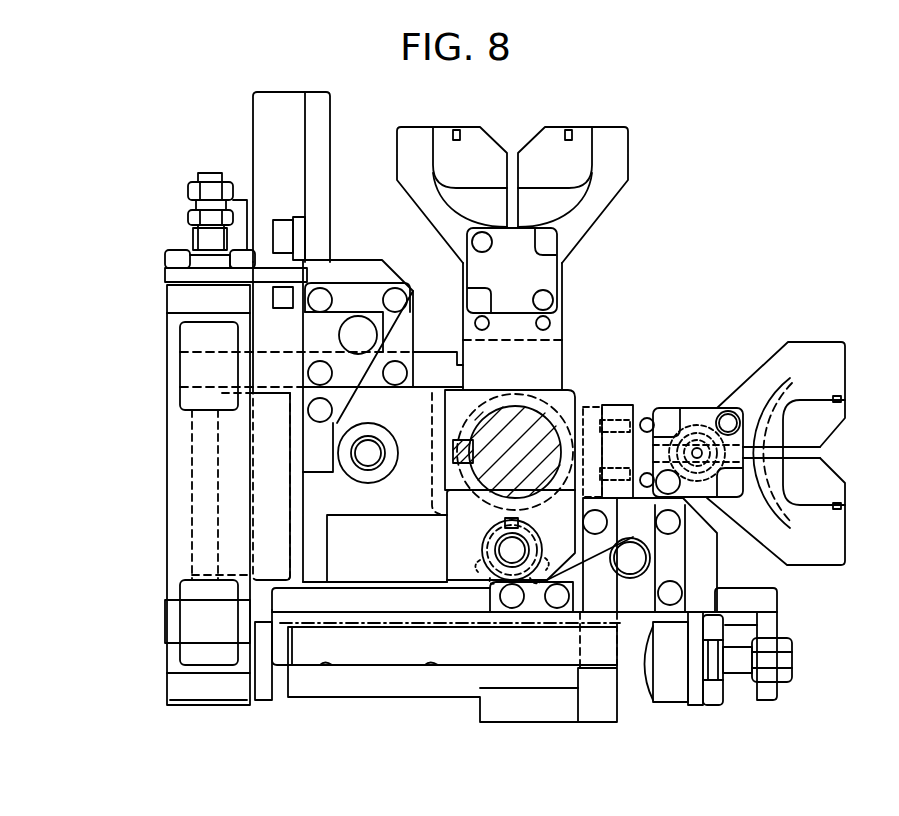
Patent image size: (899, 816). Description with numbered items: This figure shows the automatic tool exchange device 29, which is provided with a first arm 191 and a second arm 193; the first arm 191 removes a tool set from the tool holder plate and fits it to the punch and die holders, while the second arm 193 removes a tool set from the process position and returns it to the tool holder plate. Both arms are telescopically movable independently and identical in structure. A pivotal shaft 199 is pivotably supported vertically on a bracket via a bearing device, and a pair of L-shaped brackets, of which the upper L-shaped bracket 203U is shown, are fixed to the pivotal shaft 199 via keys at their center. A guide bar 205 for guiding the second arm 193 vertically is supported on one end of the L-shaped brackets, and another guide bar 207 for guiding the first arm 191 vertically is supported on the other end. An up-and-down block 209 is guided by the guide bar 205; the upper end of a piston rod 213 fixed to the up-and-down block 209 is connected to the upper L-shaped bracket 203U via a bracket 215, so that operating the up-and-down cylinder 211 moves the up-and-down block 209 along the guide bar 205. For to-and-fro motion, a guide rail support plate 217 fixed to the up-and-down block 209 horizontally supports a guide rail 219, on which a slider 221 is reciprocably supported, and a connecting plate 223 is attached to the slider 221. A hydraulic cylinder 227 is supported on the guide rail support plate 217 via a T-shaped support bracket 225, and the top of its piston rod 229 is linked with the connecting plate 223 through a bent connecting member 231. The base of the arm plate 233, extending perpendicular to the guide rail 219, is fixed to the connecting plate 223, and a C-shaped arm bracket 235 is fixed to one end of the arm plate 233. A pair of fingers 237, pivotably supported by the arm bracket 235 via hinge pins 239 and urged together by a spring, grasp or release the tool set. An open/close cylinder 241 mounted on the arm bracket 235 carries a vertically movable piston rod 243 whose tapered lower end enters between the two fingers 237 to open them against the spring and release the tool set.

The automatic tool exchange device 29 is at (147, 600).
The first arm 191 is at (592, 299).
The second arm 193 is at (725, 380).
The pivotal shaft 199 is at (530, 430).
The upper L-shaped bracket 203U is at (447, 510).
The guide bar 205 is at (497, 545).
The guide bar 207 is at (368, 462).
The up-and-down block 209 is at (447, 580).
The up-and-down cylinder 211 is at (680, 555).
The piston rod 213 is at (372, 333).
The bracket 215 is at (348, 300).
The guide rail support plate 217 is at (318, 105).
The guide rail 219 is at (262, 118).
The slider 221 is at (218, 460).
The connecting plate 223 is at (200, 538).
The T-shaped support bracket 225 is at (166, 276).
The hydraulic cylinder 227 is at (168, 330).
The piston rod 229 is at (195, 225).
The connecting member 231 is at (192, 200).
The arm plate 233 is at (440, 352).
The arm bracket 235 is at (620, 405).
The fingers 237 is at (405, 160).
The hinge pins 239 is at (550, 323).
The open/close cylinder 241 is at (345, 272).
The piston rod 243 is at (697, 440).